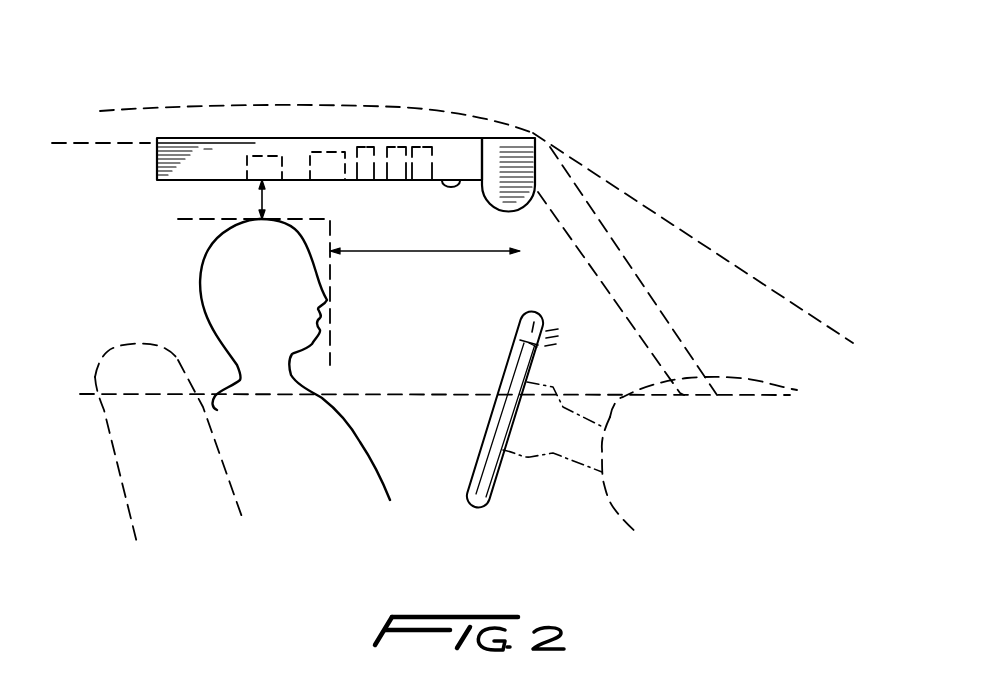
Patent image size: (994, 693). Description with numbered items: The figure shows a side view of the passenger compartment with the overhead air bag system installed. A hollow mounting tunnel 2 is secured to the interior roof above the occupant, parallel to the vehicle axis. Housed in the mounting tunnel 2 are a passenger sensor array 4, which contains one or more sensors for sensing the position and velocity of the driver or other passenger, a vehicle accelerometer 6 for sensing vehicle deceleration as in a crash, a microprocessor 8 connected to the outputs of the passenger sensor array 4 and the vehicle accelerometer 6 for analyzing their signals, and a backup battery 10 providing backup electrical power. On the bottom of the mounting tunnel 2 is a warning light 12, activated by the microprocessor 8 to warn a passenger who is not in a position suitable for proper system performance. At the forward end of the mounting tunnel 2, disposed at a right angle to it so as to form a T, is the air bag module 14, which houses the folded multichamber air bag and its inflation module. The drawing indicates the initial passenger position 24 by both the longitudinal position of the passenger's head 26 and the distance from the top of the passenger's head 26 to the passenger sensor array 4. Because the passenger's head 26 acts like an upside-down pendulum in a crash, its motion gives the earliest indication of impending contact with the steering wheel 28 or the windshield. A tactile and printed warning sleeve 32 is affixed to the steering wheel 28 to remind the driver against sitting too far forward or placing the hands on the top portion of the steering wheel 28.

The mounting tunnel 2 is at (172, 181).
The passenger sensor array 4 is at (319, 152).
The vehicle accelerometer 6 is at (424, 148).
The microprocessor 8 is at (370, 148).
The backup battery 10 is at (398, 148).
The warning light 12 is at (458, 188).
The air bag module 14 is at (503, 172).
The initial passenger position 24 is at (258, 200).
The passenger's head 26 is at (227, 260).
The steering wheel 28 is at (490, 484).
The warning sleeve 32 is at (526, 312).